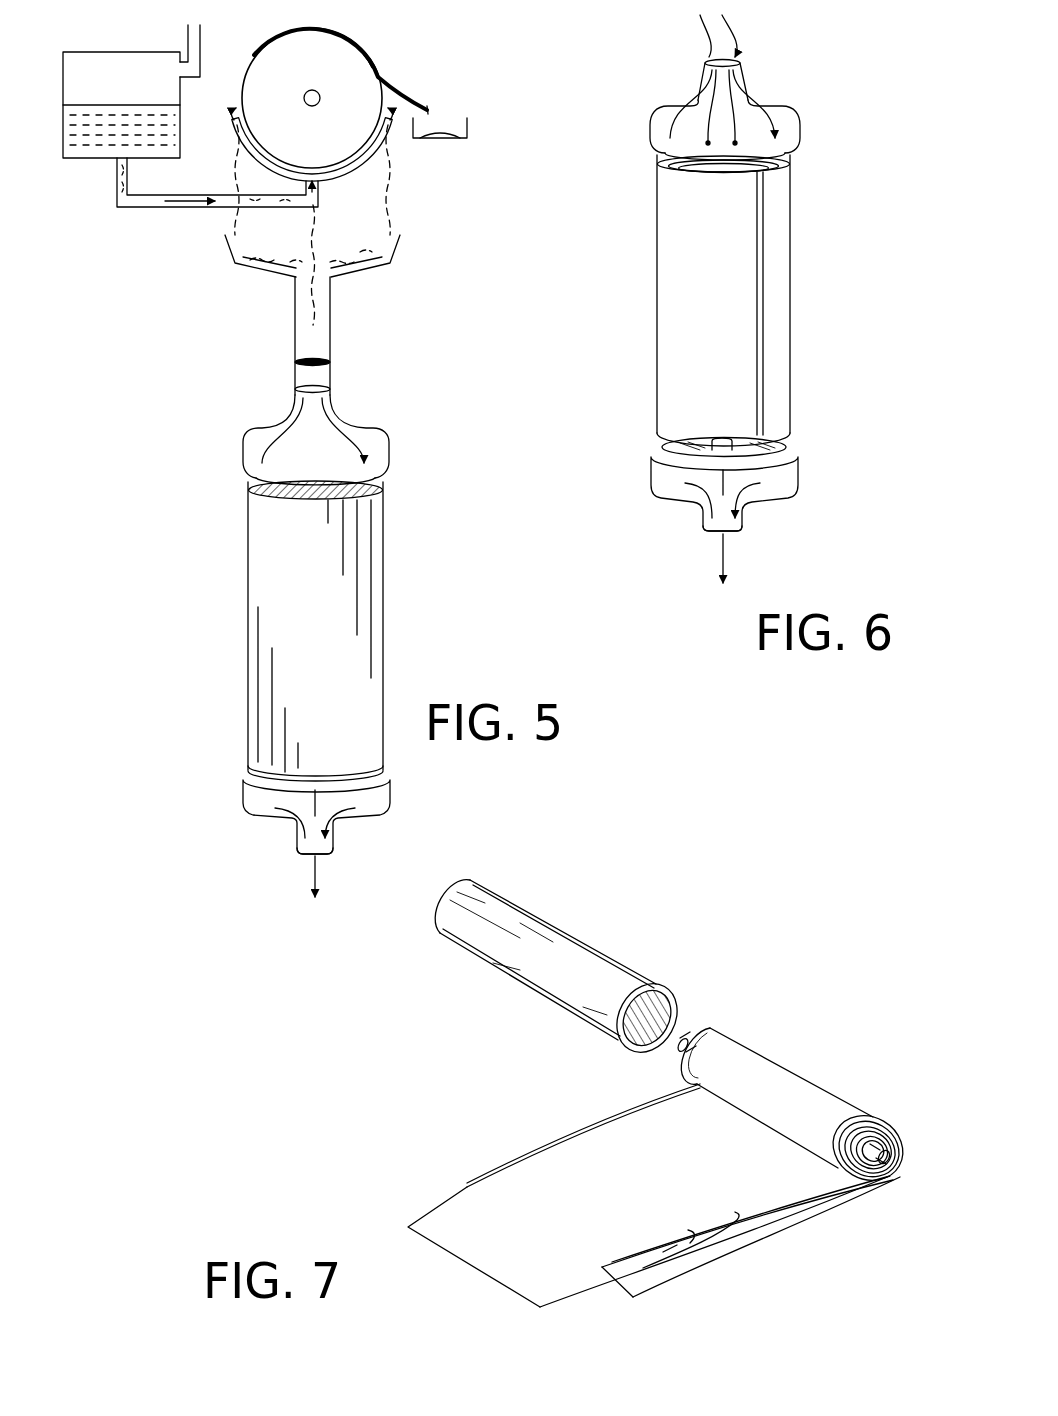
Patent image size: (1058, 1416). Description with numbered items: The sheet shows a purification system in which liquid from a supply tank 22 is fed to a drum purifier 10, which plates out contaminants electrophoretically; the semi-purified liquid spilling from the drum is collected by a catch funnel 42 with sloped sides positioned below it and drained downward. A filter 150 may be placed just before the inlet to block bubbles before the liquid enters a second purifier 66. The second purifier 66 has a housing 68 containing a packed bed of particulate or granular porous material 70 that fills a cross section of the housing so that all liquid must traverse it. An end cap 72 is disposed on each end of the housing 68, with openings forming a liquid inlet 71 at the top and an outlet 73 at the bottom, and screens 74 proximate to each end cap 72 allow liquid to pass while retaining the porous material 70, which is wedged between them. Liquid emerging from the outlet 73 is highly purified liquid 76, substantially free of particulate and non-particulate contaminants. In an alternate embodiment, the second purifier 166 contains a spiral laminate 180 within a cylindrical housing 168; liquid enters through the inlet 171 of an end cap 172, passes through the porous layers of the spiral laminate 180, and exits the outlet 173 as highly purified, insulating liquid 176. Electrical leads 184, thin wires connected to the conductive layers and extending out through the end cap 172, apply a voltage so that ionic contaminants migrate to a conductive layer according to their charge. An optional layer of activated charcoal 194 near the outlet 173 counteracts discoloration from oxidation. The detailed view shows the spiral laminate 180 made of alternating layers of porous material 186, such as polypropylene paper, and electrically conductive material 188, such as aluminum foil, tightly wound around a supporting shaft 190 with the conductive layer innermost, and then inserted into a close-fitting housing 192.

In FIG. 5, the drum purifier 10 is at (415, 33).
In FIG. 5, the supply tank 22 is at (100, 52).
In FIG. 5, the catch funnel 42 is at (225, 255).
In FIG. 5, the second purifier 66 is at (262, 551).
In FIG. 5, the housing 68 is at (248, 648).
In FIG. 5, the porous material 70 is at (263, 587).
In FIG. 5, the liquid inlet 71 is at (308, 386).
In FIG. 5, the end cap 72 is at (248, 428).
In FIG. 5, the outlet 73 is at (300, 857).
In FIG. 5, the screens 74 is at (252, 486).
In FIG. 5, the highly purified liquid 76 is at (320, 872).
In FIG. 5, the filter 150 is at (331, 360).
In FIG. 6, the second purifier 166 is at (759, 293).
In FIG. 6, the cylindrical housing 168 is at (791, 297).
In FIG. 6, the inlet 171 is at (700, 57).
In FIG. 6, the end cap 172 is at (790, 108).
In FIG. 6, the outlet 173 is at (709, 535).
In FIG. 6, the liquid 176 is at (725, 560).
In FIG. 6, the spiral laminate 180 is at (780, 222).
In FIG. 7, the spiral laminate 180 is at (662, 1095).
In FIG. 6, the electrical leads 184 is at (694, 30).
In FIG. 7, the porous material 186 is at (738, 1237).
In FIG. 7, the electrically conductive material 188 is at (437, 1220).
In FIG. 7, the supporting shaft 190 is at (886, 1178).
In FIG. 7, the housing 192 is at (630, 955).
In FIG. 6, the activated charcoal layer 194 is at (773, 432).